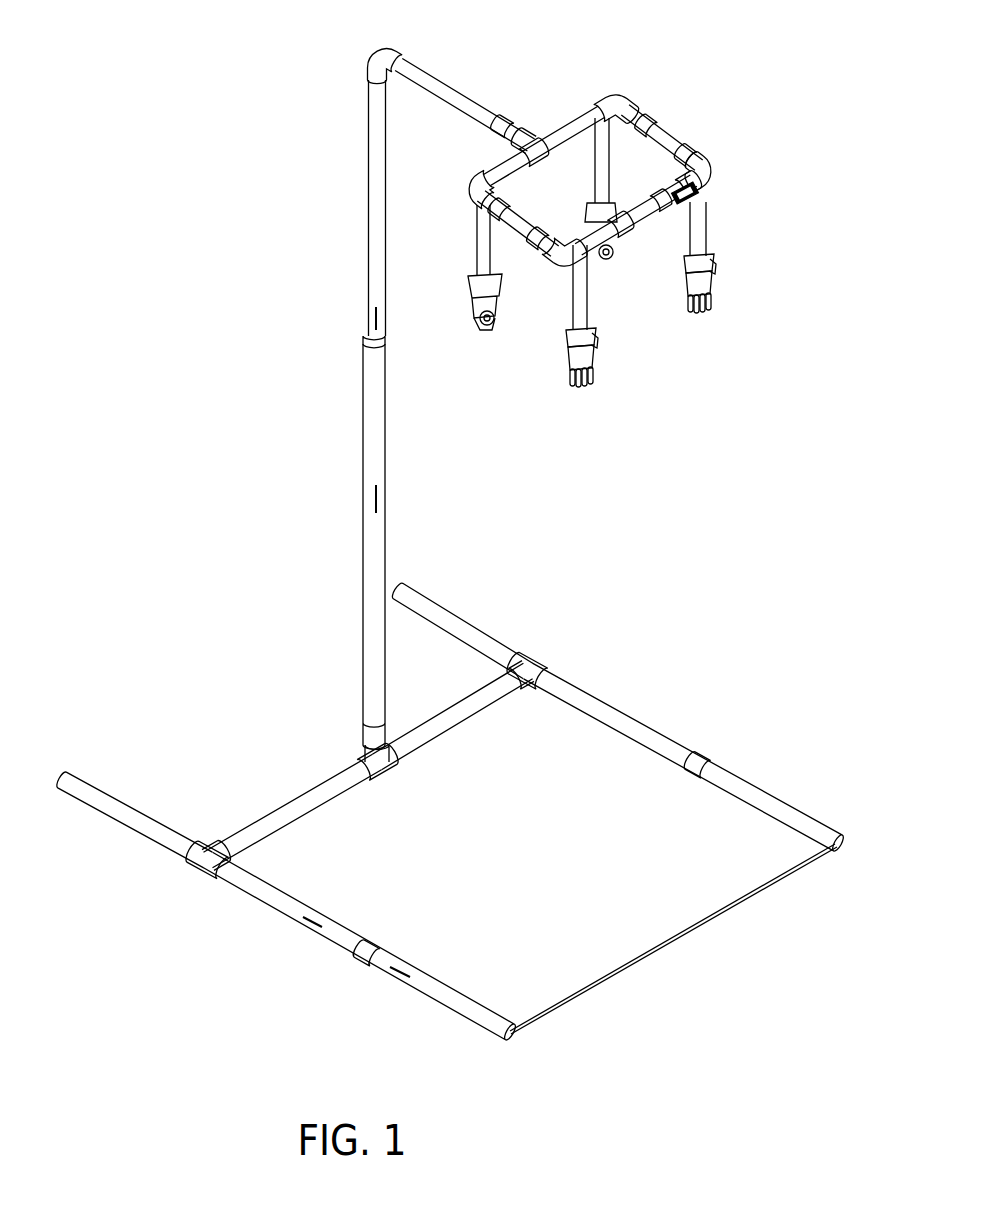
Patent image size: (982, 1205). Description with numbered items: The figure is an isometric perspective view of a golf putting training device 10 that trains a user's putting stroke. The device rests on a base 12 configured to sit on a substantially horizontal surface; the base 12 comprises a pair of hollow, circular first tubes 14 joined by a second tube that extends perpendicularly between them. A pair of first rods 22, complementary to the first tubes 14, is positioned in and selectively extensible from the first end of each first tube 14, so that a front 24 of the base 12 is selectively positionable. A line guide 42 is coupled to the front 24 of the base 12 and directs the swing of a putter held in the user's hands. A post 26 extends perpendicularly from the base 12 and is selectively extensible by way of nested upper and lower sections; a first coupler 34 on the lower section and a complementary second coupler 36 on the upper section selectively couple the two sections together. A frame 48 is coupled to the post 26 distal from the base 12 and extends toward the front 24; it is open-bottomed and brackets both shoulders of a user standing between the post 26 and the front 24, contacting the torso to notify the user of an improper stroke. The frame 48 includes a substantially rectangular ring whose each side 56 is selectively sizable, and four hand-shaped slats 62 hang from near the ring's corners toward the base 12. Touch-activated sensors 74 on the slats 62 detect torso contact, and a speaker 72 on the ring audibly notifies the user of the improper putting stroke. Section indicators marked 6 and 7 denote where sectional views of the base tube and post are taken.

The golf putting training device 10 is at (757, 113).
The base 12 is at (580, 684).
The first tubes 14 is at (248, 888).
The first rods 22 is at (462, 1015).
The front 24 is at (667, 947).
The post 26 is at (371, 427).
The first coupler 34 is at (363, 406).
The second coupler 36 is at (374, 393).
The line guide 42 is at (753, 897).
The frame 48 is at (573, 121).
The side 56 is at (650, 122).
The slats 62 is at (582, 295).
The speaker 72 is at (697, 205).
The sensors 74 is at (468, 293).
The section line 6- 6 is at (303, 918).
The section line 7- 7 is at (376, 307).